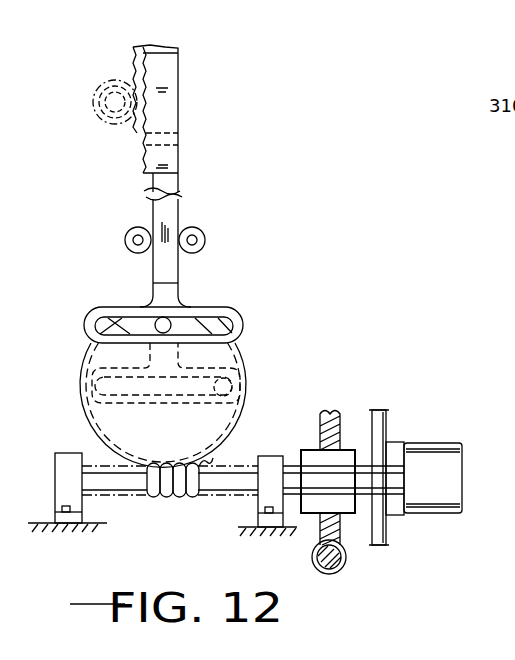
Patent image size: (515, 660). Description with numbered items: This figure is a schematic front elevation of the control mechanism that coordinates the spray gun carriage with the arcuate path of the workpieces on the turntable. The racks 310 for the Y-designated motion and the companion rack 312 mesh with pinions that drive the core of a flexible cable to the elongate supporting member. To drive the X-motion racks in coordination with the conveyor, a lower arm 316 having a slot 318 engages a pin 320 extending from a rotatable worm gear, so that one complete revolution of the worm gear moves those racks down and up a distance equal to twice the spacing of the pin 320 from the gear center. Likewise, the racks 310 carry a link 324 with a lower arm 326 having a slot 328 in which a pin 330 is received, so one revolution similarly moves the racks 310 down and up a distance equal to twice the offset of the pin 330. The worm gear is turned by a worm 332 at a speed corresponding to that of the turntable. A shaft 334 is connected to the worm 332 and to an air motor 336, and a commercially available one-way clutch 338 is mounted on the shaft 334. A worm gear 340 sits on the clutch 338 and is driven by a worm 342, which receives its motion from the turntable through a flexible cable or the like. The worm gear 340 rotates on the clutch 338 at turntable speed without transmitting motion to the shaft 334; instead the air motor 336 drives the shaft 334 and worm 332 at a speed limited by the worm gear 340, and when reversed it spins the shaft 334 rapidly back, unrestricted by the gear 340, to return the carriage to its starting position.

The racks 310 is at (170, 106).
The rack 312 is at (133, 52).
The lower arm 316 is at (240, 420).
The slot 318 is at (182, 396).
The pin 320 is at (240, 386).
The link 324 is at (170, 210).
The lower arm 326 is at (108, 307).
The slot 328 is at (118, 320).
The pin 330 is at (176, 323).
The worm 332 is at (185, 497).
The shaft 334 is at (364, 498).
The air motor 336 is at (443, 513).
The one-way clutch 338 is at (307, 513).
The worm gear 340 is at (340, 430).
The worm 342 is at (327, 574).